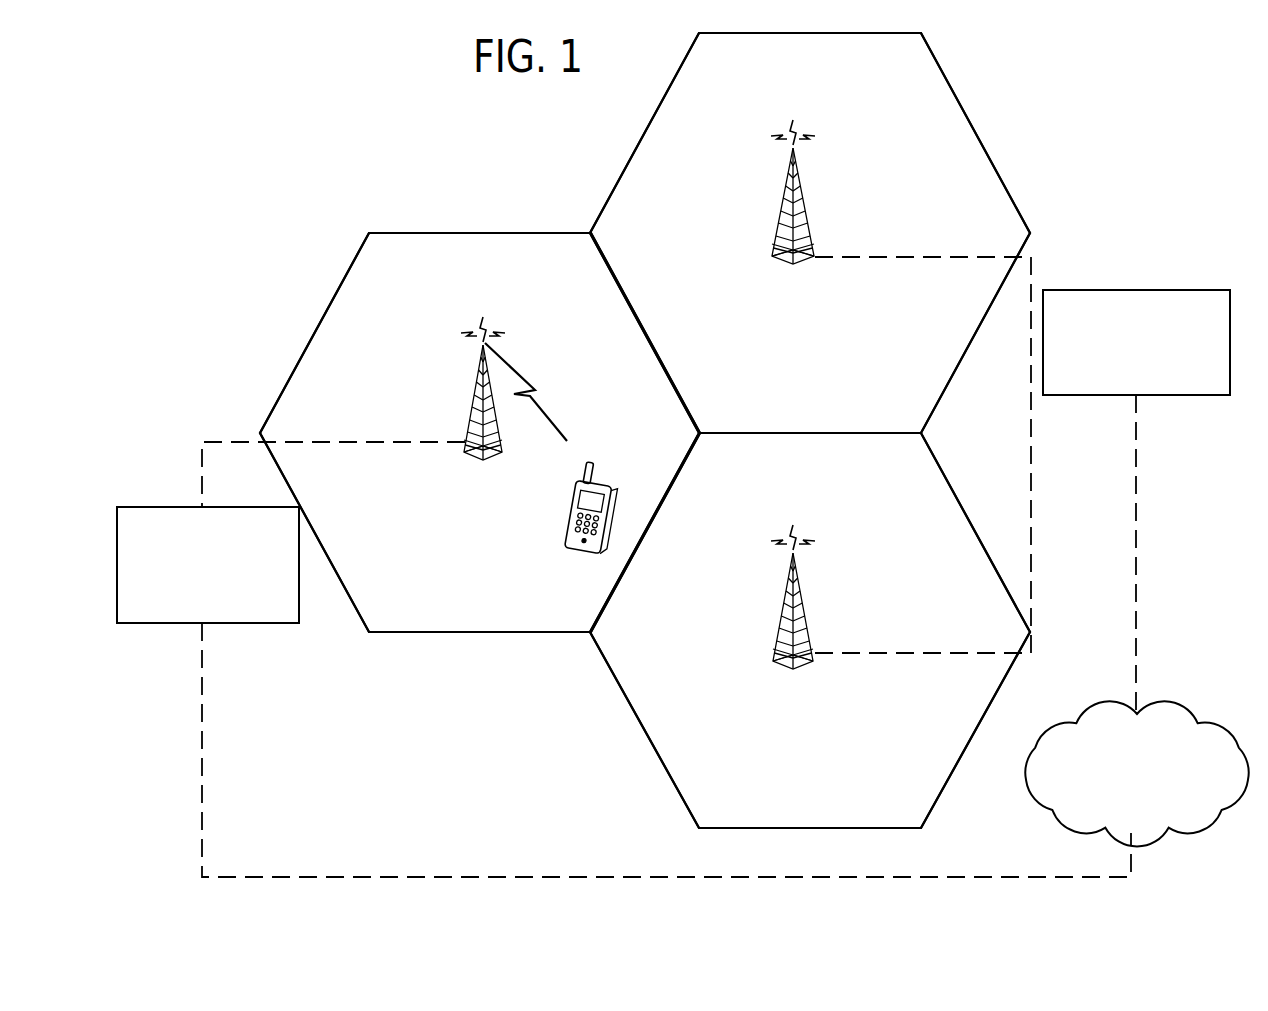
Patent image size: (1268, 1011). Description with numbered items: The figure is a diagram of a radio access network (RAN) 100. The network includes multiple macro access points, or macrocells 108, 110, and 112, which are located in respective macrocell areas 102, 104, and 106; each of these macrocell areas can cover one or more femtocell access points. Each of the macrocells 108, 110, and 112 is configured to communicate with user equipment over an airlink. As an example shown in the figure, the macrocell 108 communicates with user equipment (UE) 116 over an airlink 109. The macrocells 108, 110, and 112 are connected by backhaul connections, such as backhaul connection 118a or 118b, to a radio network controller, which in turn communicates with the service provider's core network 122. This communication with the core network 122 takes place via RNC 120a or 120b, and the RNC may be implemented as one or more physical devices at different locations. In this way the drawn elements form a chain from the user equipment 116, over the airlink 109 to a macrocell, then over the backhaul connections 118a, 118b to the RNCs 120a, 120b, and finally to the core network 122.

The radio access network 100 is at (412, 112).
The macrocell area 102 is at (312, 306).
The macrocell area 104 is at (964, 90).
The macrocell area 106 is at (620, 733).
The macrocell 108 is at (470, 452).
The airlink 109 is at (532, 391).
The macrocell 110 is at (797, 262).
The macrocell 112 is at (797, 667).
The user equipment 116 is at (565, 553).
The backhaul connection 118a is at (200, 460).
The backhaul connection 118b is at (1032, 556).
The radio network controller 120a is at (208, 565).
The radio network controller 120b is at (1136, 501).
The core network 122 is at (1128, 702).